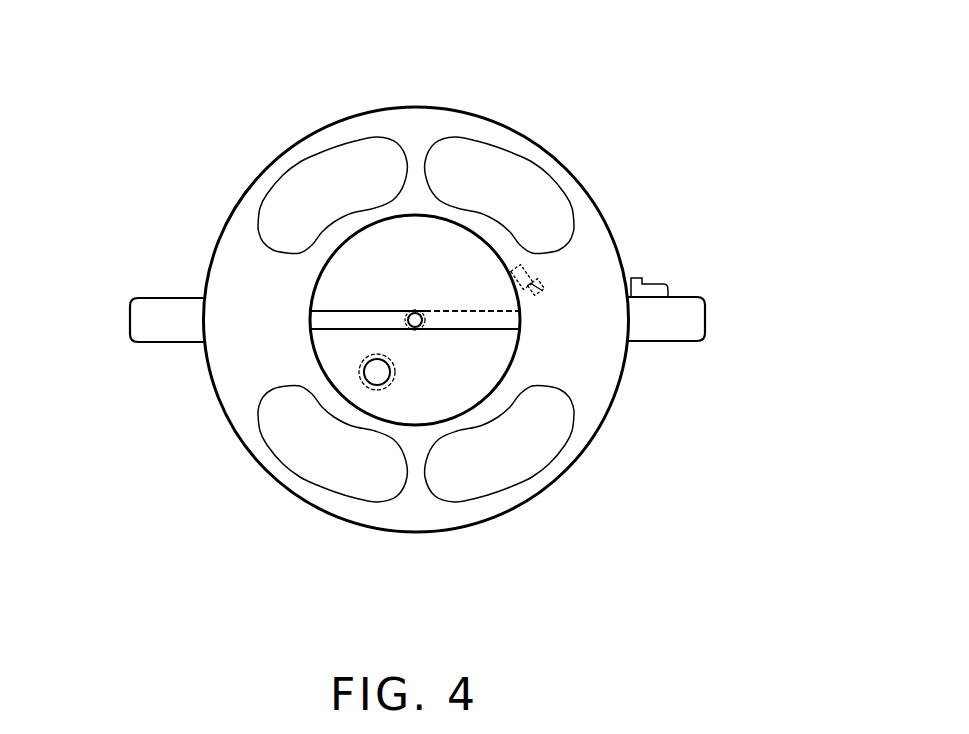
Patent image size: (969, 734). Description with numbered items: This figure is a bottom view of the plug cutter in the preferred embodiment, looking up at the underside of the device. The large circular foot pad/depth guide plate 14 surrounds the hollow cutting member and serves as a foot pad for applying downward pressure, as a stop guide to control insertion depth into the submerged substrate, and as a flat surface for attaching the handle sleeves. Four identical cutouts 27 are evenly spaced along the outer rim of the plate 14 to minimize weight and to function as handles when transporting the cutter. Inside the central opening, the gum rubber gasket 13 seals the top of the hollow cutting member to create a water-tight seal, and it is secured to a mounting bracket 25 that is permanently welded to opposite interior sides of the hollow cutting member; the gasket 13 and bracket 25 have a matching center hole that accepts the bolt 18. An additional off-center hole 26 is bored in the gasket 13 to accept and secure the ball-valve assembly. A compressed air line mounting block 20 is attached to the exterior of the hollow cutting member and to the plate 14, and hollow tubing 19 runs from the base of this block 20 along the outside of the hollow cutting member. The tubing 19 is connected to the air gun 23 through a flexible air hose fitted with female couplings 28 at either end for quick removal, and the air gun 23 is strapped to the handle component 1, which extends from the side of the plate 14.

The handle component 1 is at (178, 318).
The gum rubber gasket 13 is at (462, 380).
The circular foot pad/depth guide plate 14 is at (585, 231).
The bolt 18 is at (421, 307).
The hollow tubing 19 is at (540, 287).
The compressed air line mounting block 20 is at (548, 292).
The air gun 23 is at (647, 277).
The mounting bracket 25 is at (461, 316).
The hole 26 is at (378, 373).
The cutouts 27 is at (325, 428).
The female coupling 28 is at (412, 305).